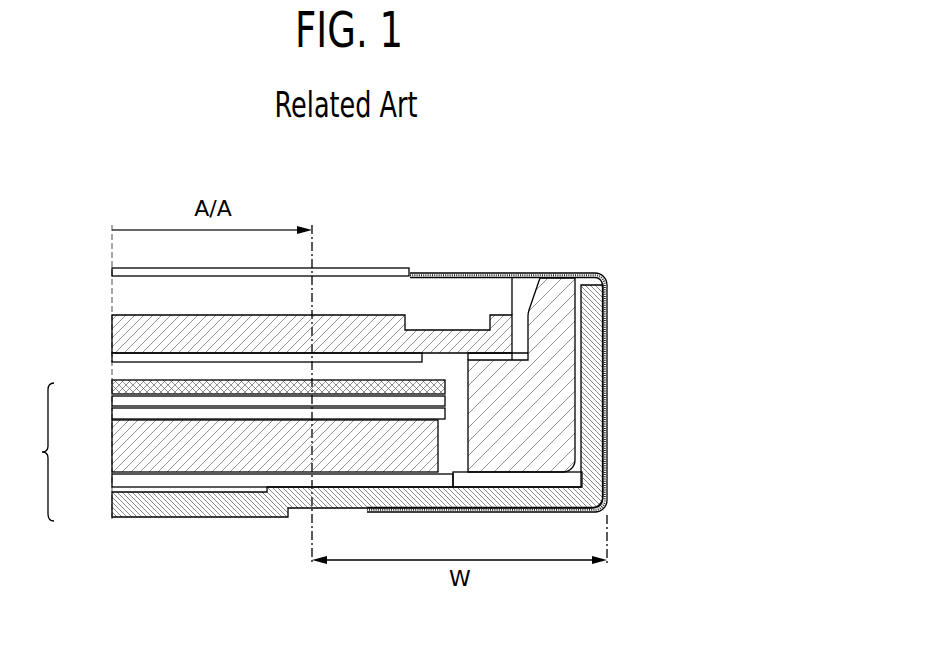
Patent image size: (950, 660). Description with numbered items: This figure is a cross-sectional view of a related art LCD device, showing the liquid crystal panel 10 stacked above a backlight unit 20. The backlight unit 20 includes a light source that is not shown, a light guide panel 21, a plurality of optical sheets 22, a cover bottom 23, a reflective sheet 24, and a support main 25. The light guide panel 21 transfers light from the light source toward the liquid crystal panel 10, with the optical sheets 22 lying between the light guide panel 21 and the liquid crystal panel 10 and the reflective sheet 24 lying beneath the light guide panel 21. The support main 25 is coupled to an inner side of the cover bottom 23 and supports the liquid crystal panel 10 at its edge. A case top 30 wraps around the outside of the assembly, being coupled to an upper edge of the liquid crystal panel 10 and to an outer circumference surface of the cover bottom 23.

The liquid crystal panel 10 is at (135, 329).
The backlight unit 20 is at (34, 452).
The light guide panel 21 is at (137, 442).
The optical sheets 22 is at (135, 386).
The cover bottom 23 is at (134, 507).
The reflective sheet 24 is at (137, 483).
The support main 25 is at (540, 408).
The case top 30 is at (608, 328).